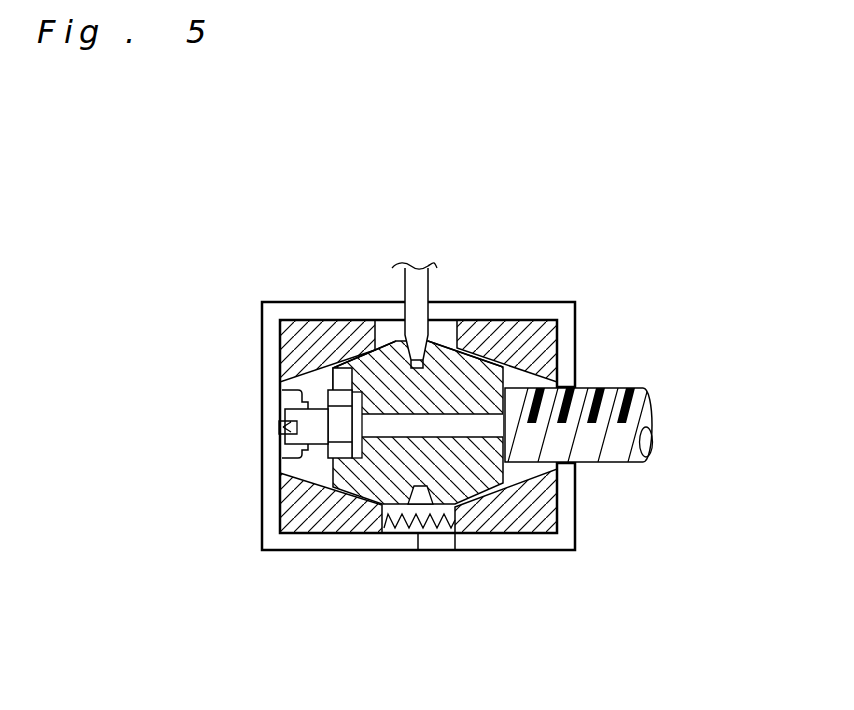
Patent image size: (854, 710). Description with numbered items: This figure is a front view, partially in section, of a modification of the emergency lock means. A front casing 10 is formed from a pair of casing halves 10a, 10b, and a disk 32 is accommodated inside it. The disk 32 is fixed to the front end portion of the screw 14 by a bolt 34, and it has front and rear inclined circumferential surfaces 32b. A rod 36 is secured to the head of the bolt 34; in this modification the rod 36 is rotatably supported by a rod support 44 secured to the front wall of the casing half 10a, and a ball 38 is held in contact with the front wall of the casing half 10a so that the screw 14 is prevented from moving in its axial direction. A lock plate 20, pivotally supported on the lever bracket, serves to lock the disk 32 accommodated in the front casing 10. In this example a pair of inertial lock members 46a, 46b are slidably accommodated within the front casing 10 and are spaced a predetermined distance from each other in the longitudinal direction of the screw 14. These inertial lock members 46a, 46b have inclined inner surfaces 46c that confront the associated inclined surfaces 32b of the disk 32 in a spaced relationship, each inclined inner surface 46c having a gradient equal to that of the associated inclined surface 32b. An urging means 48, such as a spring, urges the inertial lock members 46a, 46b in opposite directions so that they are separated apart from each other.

The front casing 10 is at (470, 648).
The casing half 10a is at (347, 543).
The casing half 10b is at (458, 545).
The screw 14 is at (610, 448).
The lock plate 20 is at (418, 318).
The disk 32 is at (480, 368).
The inclined circumferential surfaces 32b is at (352, 365).
The bolt 34 is at (330, 450).
The rod 36 is at (330, 447).
The ball 38 is at (285, 428).
The rod support 44 is at (300, 390).
The inertial lock member 46a is at (308, 512).
The inertial lock member 46b is at (537, 503).
The inclined inner surfaces 46c is at (333, 503).
The urging means 48 is at (486, 505).